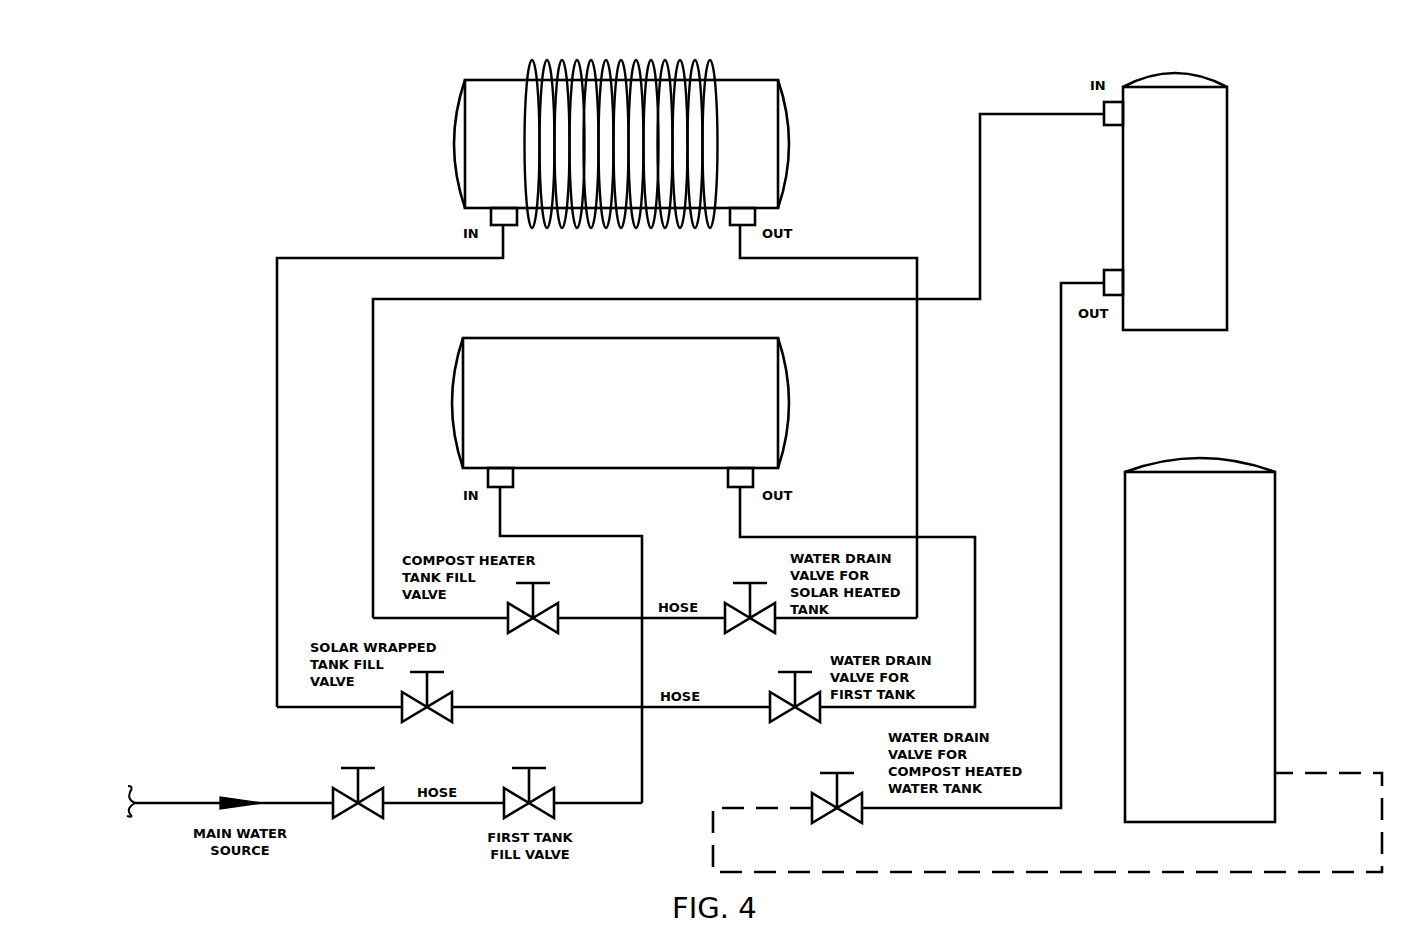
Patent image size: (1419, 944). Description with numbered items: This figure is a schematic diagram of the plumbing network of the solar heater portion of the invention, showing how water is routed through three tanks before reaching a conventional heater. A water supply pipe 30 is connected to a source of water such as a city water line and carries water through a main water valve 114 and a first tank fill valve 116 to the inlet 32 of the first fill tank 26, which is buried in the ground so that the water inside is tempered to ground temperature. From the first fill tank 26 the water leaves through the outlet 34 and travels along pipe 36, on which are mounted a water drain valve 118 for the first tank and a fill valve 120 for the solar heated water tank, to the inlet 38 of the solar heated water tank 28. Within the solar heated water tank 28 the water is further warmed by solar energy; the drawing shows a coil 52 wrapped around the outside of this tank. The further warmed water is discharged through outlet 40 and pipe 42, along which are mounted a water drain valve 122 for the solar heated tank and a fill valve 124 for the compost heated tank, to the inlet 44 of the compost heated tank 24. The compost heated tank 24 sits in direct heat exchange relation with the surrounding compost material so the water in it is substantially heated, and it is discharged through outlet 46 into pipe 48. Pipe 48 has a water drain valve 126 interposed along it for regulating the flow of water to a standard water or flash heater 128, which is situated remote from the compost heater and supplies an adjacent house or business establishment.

The compost heated tank 24 is at (1212, 263).
The first fill tank 26 is at (755, 347).
The solar heated water tank 28 is at (752, 92).
The water supply pipe 30 is at (290, 800).
The inlet 32 is at (508, 480).
The outlet 34 is at (732, 480).
The pipe 36 is at (950, 537).
The inlet 38 is at (506, 224).
The outlet 40 is at (736, 224).
The pipe 42 is at (878, 257).
The inlet 44 is at (1113, 118).
The outlet 46 is at (1113, 280).
The pipe 48 is at (1061, 412).
The solar heating coil 52 is at (617, 232).
The main water valve 114 is at (374, 806).
The first tank fill valve 116 is at (549, 796).
The water drain valve 118 is at (812, 712).
The fill valve 120 is at (443, 710).
The water drain valve 122 is at (766, 622).
The fill valve 124 is at (548, 622).
The water drain valve 126 is at (852, 812).
The standard water or flash heater 128 is at (1253, 678).